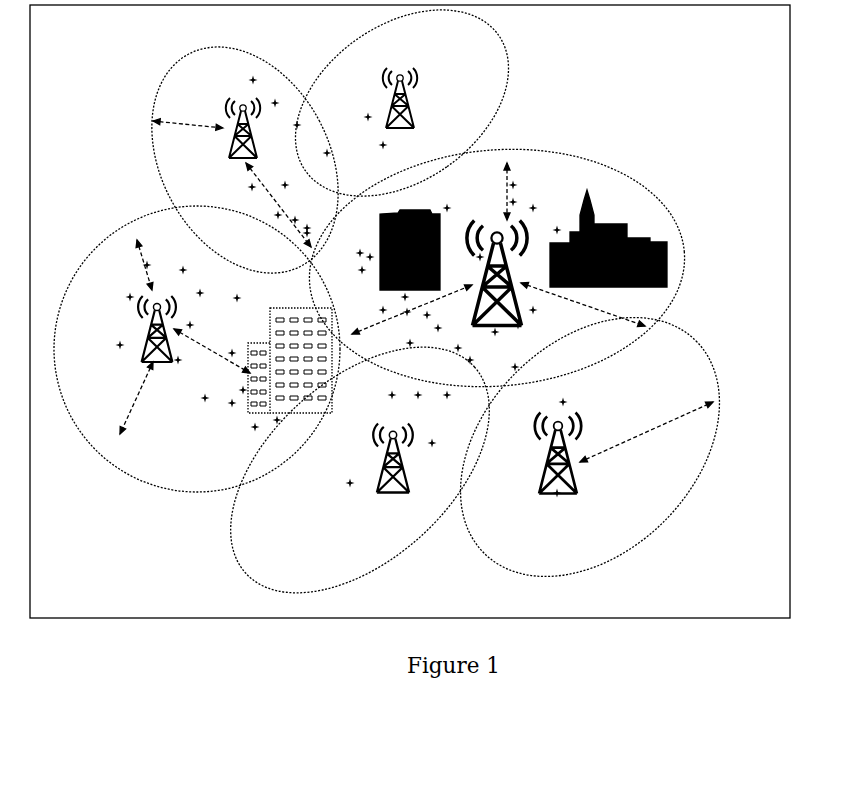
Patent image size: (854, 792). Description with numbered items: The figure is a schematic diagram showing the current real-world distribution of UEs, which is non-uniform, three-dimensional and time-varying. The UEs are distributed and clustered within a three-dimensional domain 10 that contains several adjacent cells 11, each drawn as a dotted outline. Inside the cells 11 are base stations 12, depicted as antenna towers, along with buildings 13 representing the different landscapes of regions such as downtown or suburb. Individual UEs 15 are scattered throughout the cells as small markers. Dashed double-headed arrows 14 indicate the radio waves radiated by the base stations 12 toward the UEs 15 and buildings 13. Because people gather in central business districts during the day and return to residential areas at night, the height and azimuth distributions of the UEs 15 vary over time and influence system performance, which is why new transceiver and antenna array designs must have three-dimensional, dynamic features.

The 3D domain 10 is at (693, 97).
The adjacent cells 11 is at (147, 139).
The base stations 12 is at (418, 93).
The buildings 13 is at (415, 211).
The communication link 14 is at (142, 400).
The individual UEs 15 is at (120, 362).